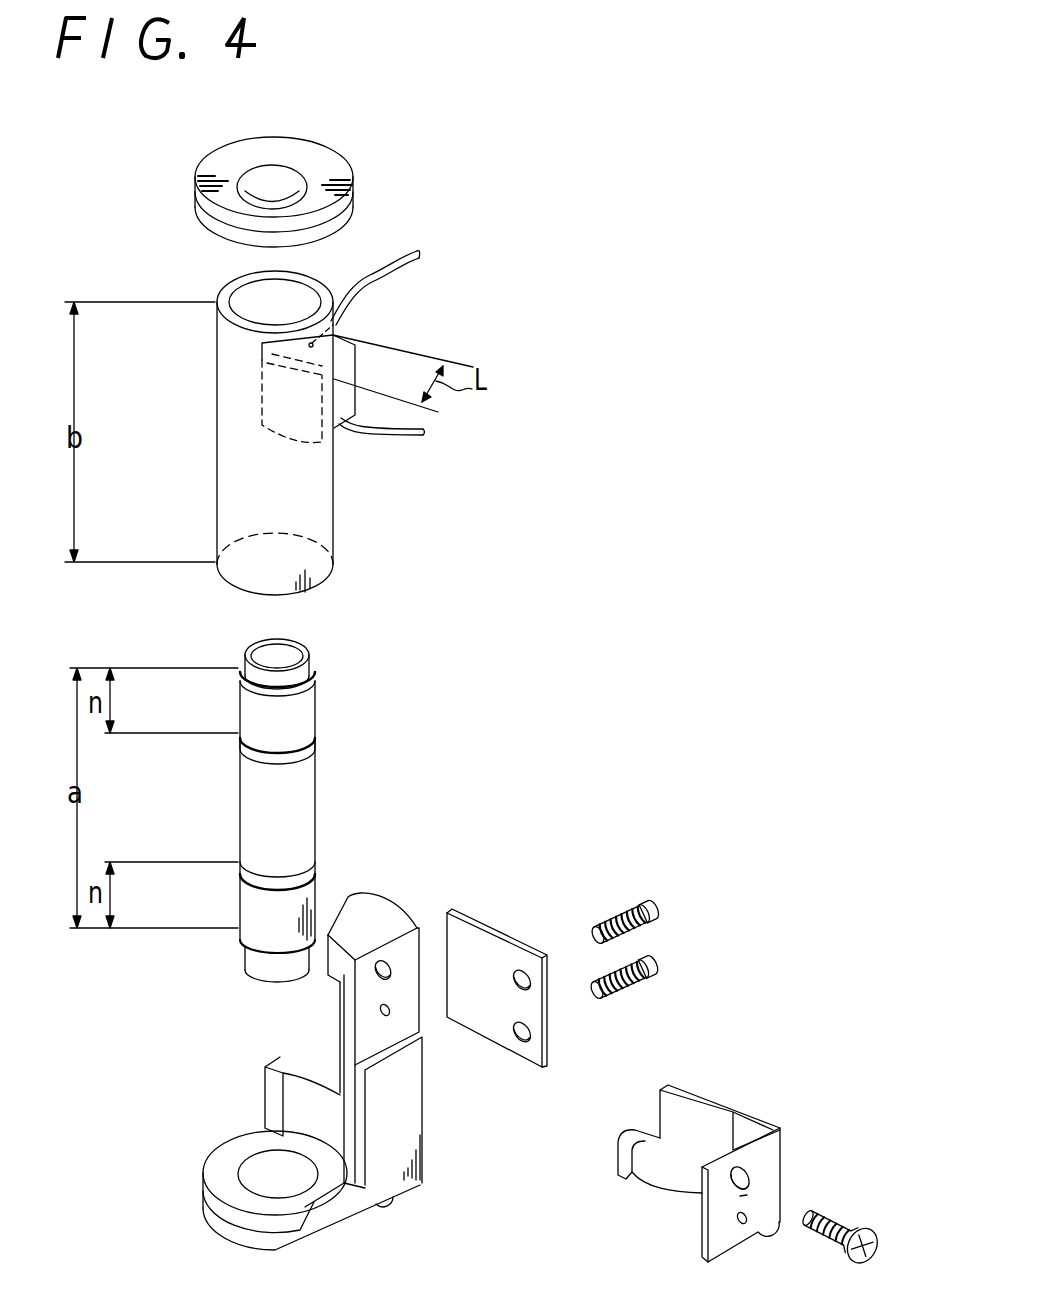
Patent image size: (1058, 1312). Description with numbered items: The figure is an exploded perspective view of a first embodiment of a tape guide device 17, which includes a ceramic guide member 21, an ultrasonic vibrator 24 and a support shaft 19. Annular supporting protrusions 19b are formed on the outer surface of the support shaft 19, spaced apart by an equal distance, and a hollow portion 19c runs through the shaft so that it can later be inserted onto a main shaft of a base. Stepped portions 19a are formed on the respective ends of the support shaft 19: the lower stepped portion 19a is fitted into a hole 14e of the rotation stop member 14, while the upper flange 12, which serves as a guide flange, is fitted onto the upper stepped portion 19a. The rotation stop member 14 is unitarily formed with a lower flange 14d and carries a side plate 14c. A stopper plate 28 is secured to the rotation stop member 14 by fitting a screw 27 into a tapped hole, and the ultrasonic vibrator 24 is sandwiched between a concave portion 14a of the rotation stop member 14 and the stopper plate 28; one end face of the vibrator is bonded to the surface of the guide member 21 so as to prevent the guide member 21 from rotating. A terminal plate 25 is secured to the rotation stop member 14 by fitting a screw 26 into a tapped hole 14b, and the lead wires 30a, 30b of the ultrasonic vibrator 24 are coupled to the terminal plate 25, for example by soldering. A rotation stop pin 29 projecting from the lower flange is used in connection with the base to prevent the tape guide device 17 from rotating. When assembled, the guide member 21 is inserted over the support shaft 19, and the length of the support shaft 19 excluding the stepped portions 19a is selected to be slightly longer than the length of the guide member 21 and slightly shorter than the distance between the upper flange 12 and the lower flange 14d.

The upper flange 12 is at (312, 150).
The ceramic guide member 21 is at (217, 457).
The ultrasonic vibrator 24 is at (355, 382).
The lead wire 30a is at (399, 252).
The lead wire 30b is at (394, 442).
The tape guide device 17 is at (418, 325).
The support shaft 19 is at (240, 800).
The stepped portion 19a is at (306, 666).
The annular supporting protrusion 19b is at (316, 738).
The hollow portion 19c is at (277, 653).
The rotation stop member 14 is at (316, 1050).
The concave portion 14a is at (341, 1013).
The tapped hole 14b is at (394, 968).
The side plate 14c is at (423, 1093).
The lower flange 14d is at (238, 1158).
The hole 14e is at (263, 1180).
The rotation stop pin 29 is at (385, 1215).
The terminal plate 25 is at (505, 923).
The screw 26 is at (648, 890).
The stopper plate 28 is at (700, 1226).
The screw 27 is at (877, 1236).